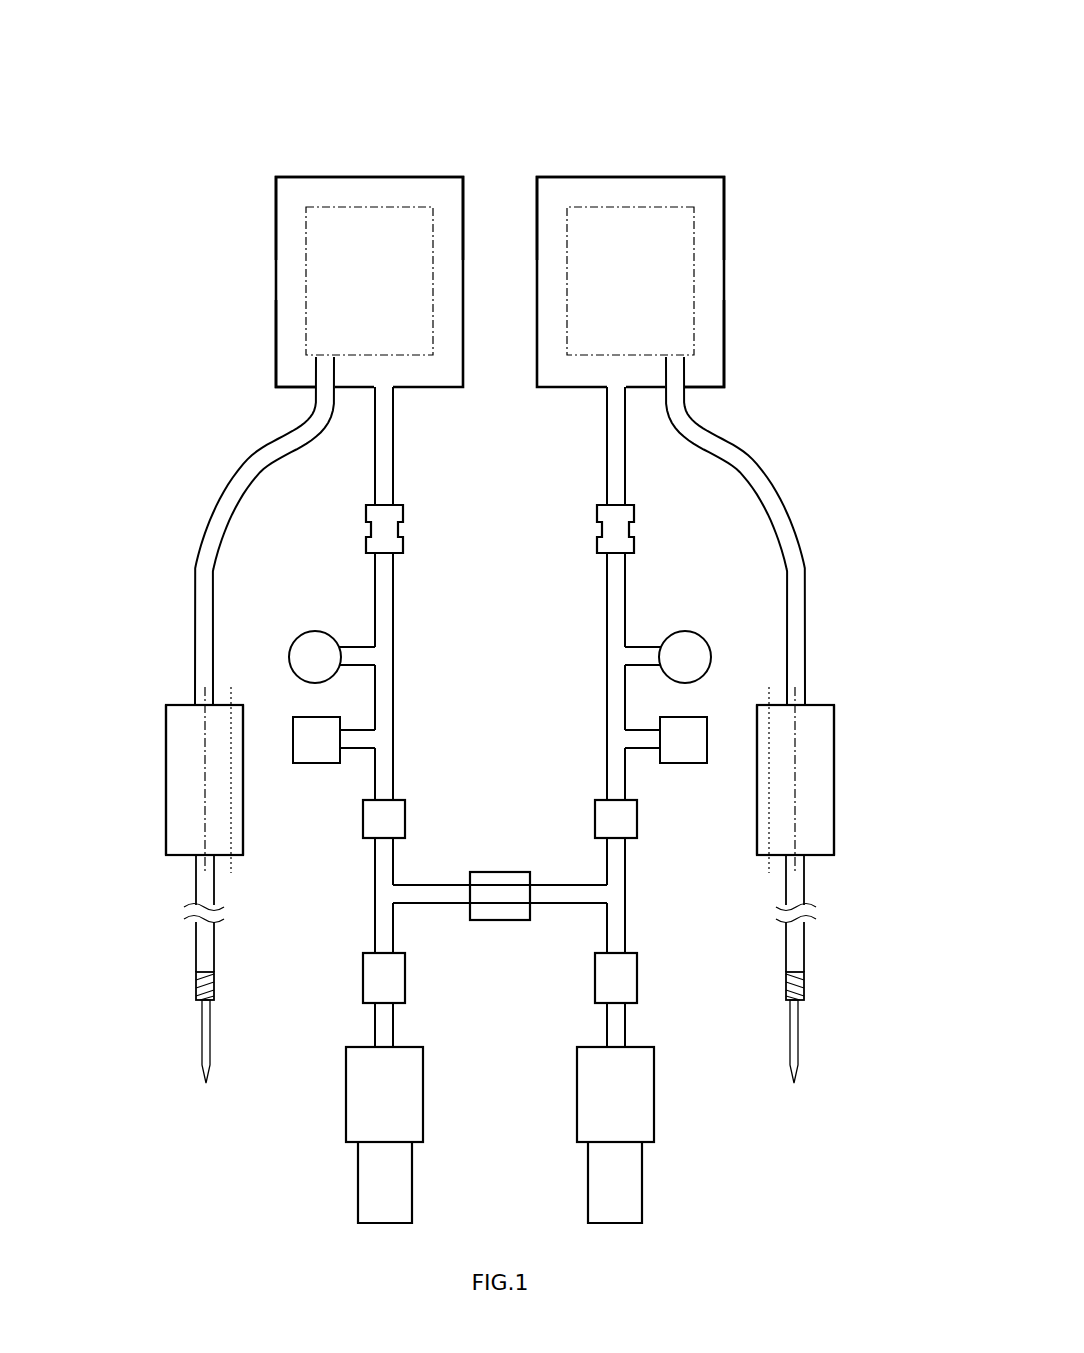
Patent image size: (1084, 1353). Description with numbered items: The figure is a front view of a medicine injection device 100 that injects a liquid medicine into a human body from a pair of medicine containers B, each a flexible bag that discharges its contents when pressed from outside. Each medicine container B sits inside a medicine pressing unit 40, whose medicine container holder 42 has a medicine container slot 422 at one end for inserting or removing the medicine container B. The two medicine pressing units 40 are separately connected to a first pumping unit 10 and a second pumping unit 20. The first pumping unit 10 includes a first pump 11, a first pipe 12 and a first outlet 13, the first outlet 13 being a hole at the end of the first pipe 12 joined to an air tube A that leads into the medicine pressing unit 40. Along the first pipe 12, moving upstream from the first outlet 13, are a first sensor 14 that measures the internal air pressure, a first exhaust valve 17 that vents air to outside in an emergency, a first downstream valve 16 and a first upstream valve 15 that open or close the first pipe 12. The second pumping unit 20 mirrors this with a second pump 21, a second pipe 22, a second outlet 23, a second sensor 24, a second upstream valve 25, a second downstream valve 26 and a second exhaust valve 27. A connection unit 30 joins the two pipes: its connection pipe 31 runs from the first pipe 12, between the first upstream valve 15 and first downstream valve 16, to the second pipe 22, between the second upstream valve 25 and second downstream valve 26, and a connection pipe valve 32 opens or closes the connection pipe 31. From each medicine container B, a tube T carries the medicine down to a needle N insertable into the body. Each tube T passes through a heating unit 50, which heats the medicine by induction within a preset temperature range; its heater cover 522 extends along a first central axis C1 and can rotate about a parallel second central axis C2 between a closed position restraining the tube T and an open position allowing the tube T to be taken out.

The medicine injection device 100 is at (806, 100).
The first pumping unit 10 is at (320, 1048).
The first pump 11 is at (345, 1105).
The first pipe 12 is at (375, 900).
The first outlet 13 is at (366, 515).
The first sensor 14 is at (312, 632).
The first upstream valve 15 is at (363, 985).
The first downstream valve 16 is at (363, 835).
The first exhaust valve 17 is at (303, 765).
The second pumping unit 20 is at (680, 1048).
The second pump 21 is at (655, 1105).
The second pipe 22 is at (625, 903).
The second outlet 23 is at (636, 515).
The second sensor 24 is at (688, 632).
The second upstream valve 25 is at (637, 985).
The second downstream valve 26 is at (637, 835).
The second exhaust valve 27 is at (697, 765).
The connection unit 30 is at (453, 930).
The connection pipe 31 is at (567, 903).
The connection pipe valve 32 is at (510, 920).
The medicine pressing unit 40 is at (262, 237).
The medicine container holder 42 is at (287, 294).
The medicine container slot 422 is at (304, 178).
The heating unit 50 is at (155, 830).
The heater cover 522 is at (165, 713).
The air tube A is at (395, 418).
The medicine container B is at (425, 207).
The tube T is at (235, 470).
The needle N is at (200, 1032).
The first central axis C1 is at (205, 765).
The second central axis C2 is at (232, 720).